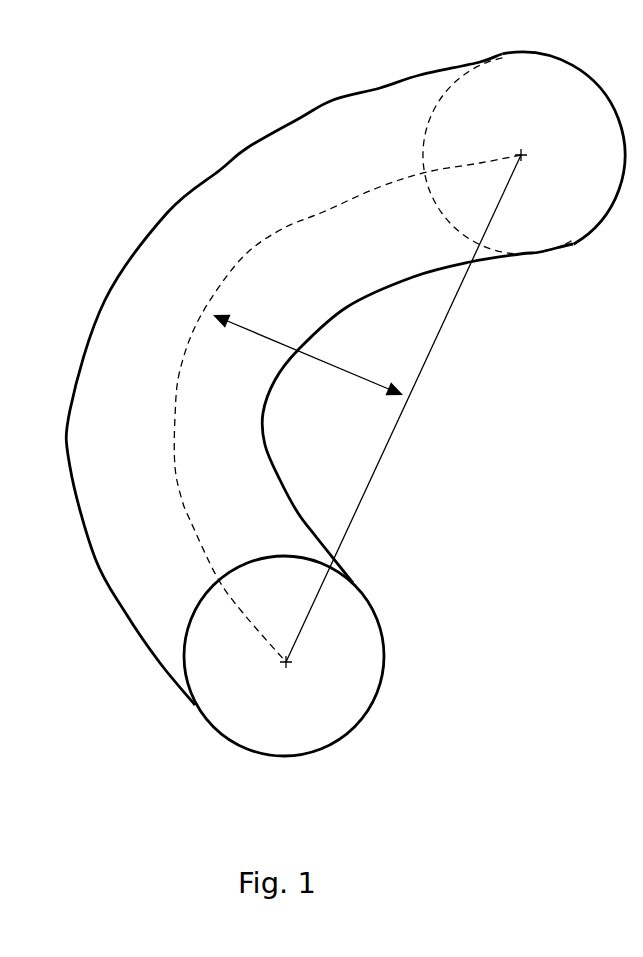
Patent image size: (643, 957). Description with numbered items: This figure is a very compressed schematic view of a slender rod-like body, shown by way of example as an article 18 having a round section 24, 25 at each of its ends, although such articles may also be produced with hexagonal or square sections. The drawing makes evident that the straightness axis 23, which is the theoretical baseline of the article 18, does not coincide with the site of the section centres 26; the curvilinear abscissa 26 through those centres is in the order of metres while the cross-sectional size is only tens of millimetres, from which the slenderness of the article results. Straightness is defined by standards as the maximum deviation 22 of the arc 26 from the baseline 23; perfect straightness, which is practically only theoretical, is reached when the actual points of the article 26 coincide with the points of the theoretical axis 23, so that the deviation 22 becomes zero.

The article 18 is at (293, 112).
The maximum deviation 22 is at (367, 392).
The straightness axis 23 is at (458, 318).
The round section 24 is at (210, 636).
The round section 25 is at (490, 93).
The curvilinear abscissa 26 is at (335, 217).